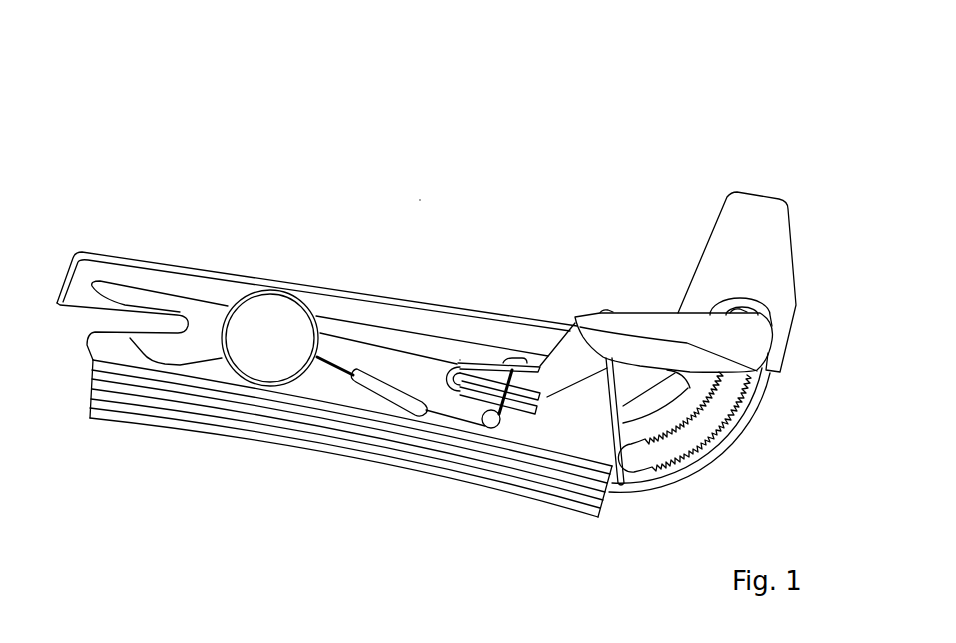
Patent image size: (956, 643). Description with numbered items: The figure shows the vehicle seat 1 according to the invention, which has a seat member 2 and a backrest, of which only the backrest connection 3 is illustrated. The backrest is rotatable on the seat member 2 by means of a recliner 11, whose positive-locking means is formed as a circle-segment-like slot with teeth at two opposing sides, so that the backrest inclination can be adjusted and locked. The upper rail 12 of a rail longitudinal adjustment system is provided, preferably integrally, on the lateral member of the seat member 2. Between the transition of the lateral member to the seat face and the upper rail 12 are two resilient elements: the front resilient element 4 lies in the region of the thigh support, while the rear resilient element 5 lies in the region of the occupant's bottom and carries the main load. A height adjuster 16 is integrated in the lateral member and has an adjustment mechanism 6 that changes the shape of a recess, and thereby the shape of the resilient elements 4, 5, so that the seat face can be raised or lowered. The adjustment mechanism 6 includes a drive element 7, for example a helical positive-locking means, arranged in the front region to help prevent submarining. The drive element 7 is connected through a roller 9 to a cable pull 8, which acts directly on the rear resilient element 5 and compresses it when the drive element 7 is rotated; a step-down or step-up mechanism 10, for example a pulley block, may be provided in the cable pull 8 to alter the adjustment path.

The vehicle seat 1 is at (400, 129).
The seat member 2 is at (208, 266).
The backrest connection 3 is at (743, 203).
The front resilient element 4 is at (183, 312).
The rear resilient element 5 is at (458, 365).
The adjustment mechanism 6 is at (470, 229).
The drive element 7 is at (278, 308).
The cable pull 8 is at (503, 412).
The roller 9 is at (492, 423).
The step-down or step-up mechanism 10 is at (387, 390).
The recliner 11 is at (746, 439).
The upper rail 12 is at (200, 390).
The height adjuster 16 is at (423, 152).